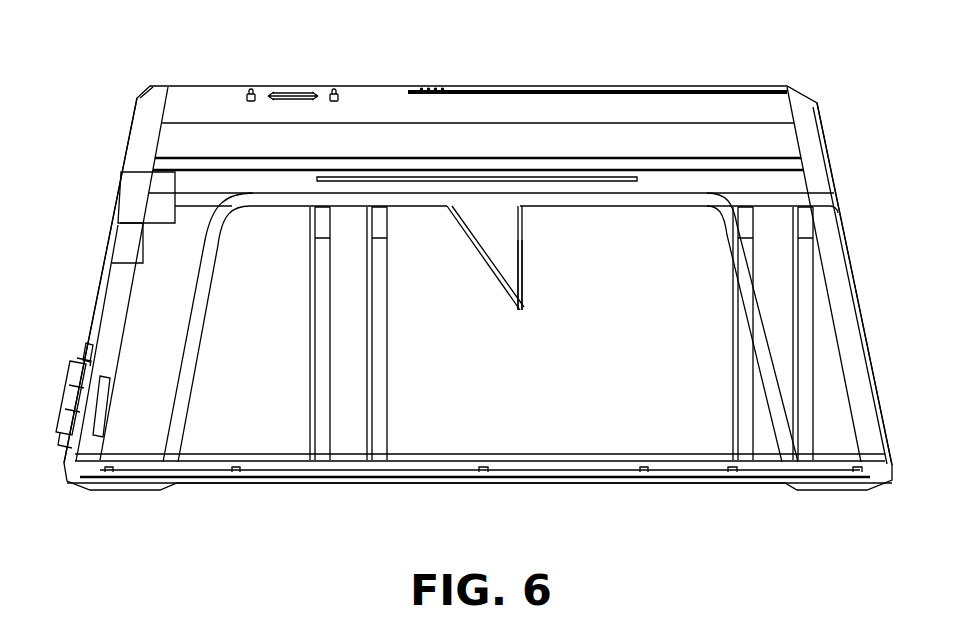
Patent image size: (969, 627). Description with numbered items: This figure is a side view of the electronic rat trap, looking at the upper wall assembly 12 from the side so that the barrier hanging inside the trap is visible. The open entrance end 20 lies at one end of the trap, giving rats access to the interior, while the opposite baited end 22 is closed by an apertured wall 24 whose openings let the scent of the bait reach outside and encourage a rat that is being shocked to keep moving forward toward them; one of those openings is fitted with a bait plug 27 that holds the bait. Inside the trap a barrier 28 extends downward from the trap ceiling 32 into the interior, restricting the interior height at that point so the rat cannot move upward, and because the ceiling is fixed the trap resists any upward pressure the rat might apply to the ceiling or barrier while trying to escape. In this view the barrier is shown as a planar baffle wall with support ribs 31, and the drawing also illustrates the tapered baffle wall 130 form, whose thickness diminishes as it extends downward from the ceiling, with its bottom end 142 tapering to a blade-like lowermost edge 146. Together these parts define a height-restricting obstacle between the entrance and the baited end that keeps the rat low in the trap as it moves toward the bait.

The upper wall assembly 12 is at (228, 97).
The entrance end 20 is at (860, 307).
The baited end 22 is at (80, 297).
The apertured wall 24 is at (90, 328).
The bait plug 27 is at (70, 398).
The barrier 28 is at (497, 237).
The tapered baffle wall 130 is at (523, 237).
The trap ceiling 32 is at (632, 209).
The support ribs 31 is at (493, 280).
The blade-like lowermost edge 146 is at (523, 280).
The bottom end 142 is at (530, 285).